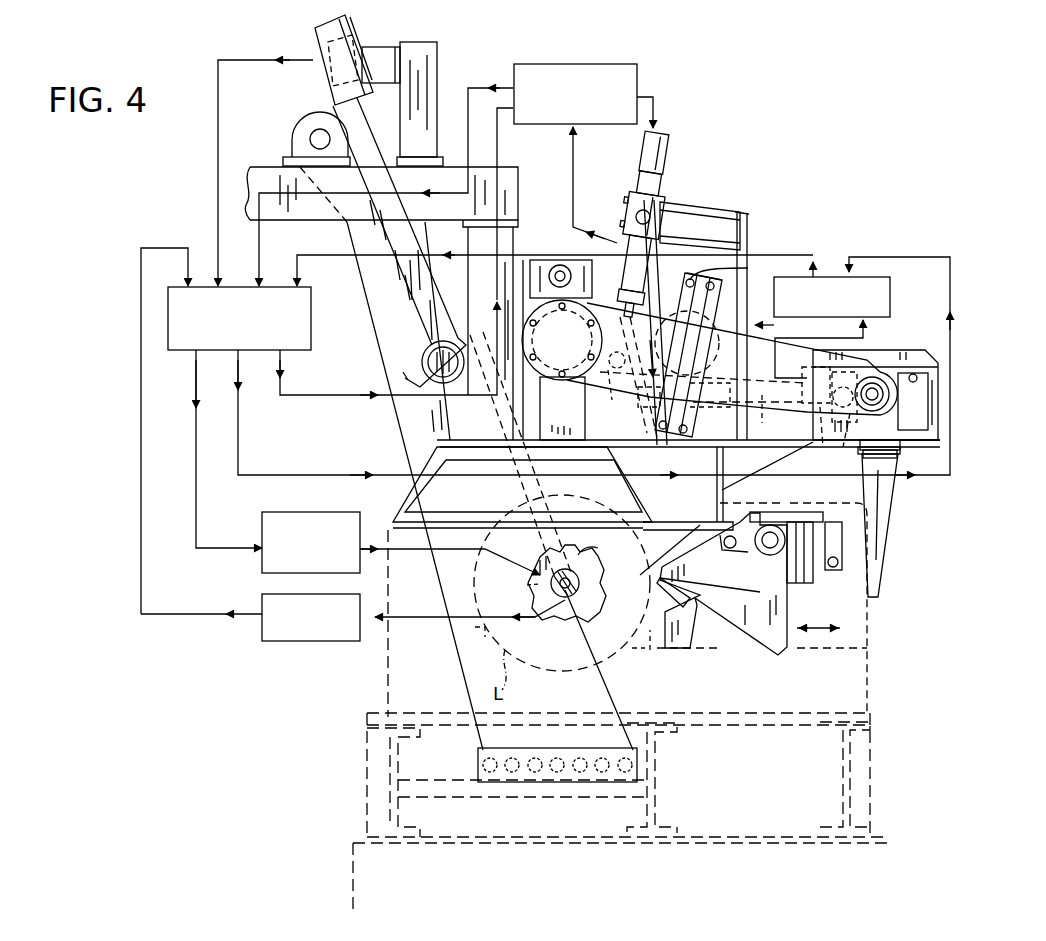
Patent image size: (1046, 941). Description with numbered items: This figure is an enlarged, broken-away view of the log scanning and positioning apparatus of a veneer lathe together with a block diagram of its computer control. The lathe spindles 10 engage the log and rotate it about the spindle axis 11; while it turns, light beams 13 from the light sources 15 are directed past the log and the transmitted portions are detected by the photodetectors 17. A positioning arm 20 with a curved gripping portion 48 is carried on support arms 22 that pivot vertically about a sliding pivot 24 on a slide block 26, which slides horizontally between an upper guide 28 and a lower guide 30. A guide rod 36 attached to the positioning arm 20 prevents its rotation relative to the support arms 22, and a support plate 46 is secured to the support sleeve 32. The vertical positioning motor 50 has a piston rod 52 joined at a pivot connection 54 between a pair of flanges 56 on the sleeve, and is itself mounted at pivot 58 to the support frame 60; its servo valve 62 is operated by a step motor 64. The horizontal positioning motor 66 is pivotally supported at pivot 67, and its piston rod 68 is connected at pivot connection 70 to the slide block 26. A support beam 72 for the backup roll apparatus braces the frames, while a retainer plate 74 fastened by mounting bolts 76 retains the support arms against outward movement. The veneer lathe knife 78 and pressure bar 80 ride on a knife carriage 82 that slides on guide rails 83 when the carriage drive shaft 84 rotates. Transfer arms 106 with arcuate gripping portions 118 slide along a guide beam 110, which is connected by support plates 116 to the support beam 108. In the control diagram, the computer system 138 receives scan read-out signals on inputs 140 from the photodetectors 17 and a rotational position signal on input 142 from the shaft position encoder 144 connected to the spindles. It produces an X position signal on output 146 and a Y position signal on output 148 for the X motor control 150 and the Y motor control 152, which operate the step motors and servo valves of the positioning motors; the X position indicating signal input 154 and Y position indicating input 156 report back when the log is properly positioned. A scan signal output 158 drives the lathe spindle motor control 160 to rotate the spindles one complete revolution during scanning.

The lathe spindle 10 is at (580, 583).
The spindle axis 11 is at (565, 598).
The light beam 13 is at (383, 305).
The light source 15 is at (548, 782).
The photodetector 17 is at (312, 40).
The positioning arm 20 is at (573, 414).
The support arm 22 is at (732, 362).
The sliding pivot 24 is at (872, 388).
The slide block 26 is at (912, 432).
The upper guide 28 is at (912, 375).
The lower guide 30 is at (930, 440).
The support sleeve 32 is at (523, 320).
The guide rod 36 is at (553, 265).
The support plate 46 is at (540, 340).
The curved gripping portion 48 is at (596, 550).
The vertical positioning motor 50 is at (614, 204).
The piston rod 52 is at (614, 273).
The pivot connection 54 is at (590, 350).
The flange 56 is at (610, 386).
The pivot 58 is at (660, 218).
The support frame 60 is at (724, 208).
The servo valve 62 is at (680, 185).
The step motor 64 is at (690, 157).
The horizontal positioning motor 66 is at (762, 410).
The pivot 67 is at (712, 405).
The piston rod 68 is at (822, 441).
The pivot connection 70 is at (843, 441).
The support beam 72 is at (675, 330).
The retainer plate 74 is at (712, 302).
The mounting bolt 76 is at (700, 272).
The veneer lathe knife 78 is at (652, 600).
The pressure bar 80 is at (680, 538).
The knife carriage 82 is at (788, 600).
The guide rail 83 is at (650, 650).
The carriage drive shaft 84 is at (770, 530).
The transfer arm 106 is at (433, 413).
The support beam 108 is at (320, 130).
The guide beam 110 is at (420, 352).
The support plate 116 is at (332, 230).
The arcuate gripping portion 118 is at (527, 592).
The computer system 138 is at (168, 318).
The input 140 is at (218, 176).
The input 142 is at (163, 248).
The shaft position encoder 144 is at (313, 641).
The output 146 is at (296, 474).
The output 148 is at (312, 395).
The X motor control 150 is at (832, 277).
The Y motor control 152 is at (637, 80).
The X position indicating signal input 154 is at (325, 256).
The Y position indicating input 156 is at (268, 192).
The scan signal output 158 is at (196, 448).
The lathe spindle motor control 160 is at (292, 512).